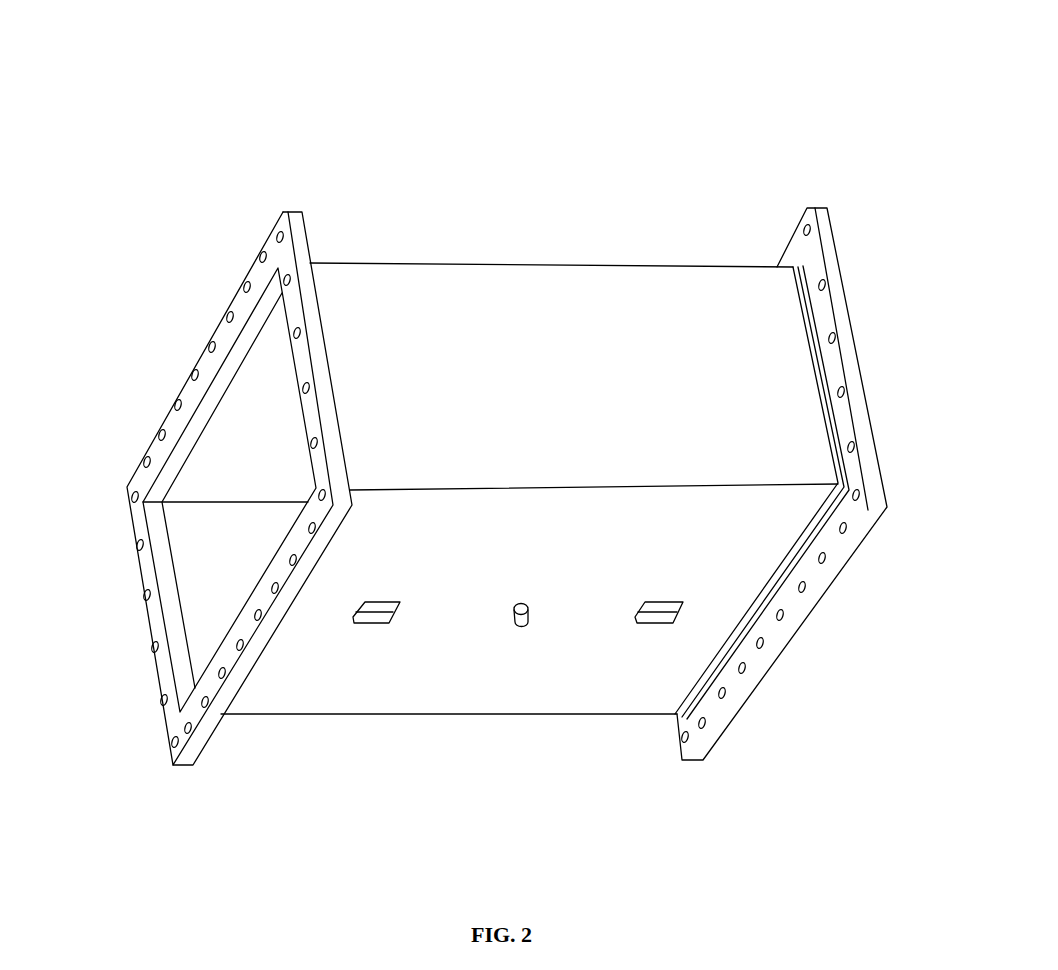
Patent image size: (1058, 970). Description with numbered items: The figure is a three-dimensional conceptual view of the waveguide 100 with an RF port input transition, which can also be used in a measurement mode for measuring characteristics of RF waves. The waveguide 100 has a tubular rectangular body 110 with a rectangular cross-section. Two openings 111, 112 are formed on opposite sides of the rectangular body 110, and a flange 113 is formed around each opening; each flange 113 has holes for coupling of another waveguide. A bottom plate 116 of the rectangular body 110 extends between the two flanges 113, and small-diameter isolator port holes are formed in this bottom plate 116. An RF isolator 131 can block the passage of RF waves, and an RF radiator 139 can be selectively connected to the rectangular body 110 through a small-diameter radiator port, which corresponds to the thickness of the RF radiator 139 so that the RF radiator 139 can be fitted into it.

The waveguide 100 is at (597, 47).
The tubular rectangular body 110 is at (404, 230).
The opening 111 is at (154, 411).
The opening 112 is at (866, 233).
The flange 113 is at (198, 356).
The bottom plate 116 is at (428, 693).
The RF isolator 131 is at (378, 627).
The RF radiator 139 is at (520, 627).